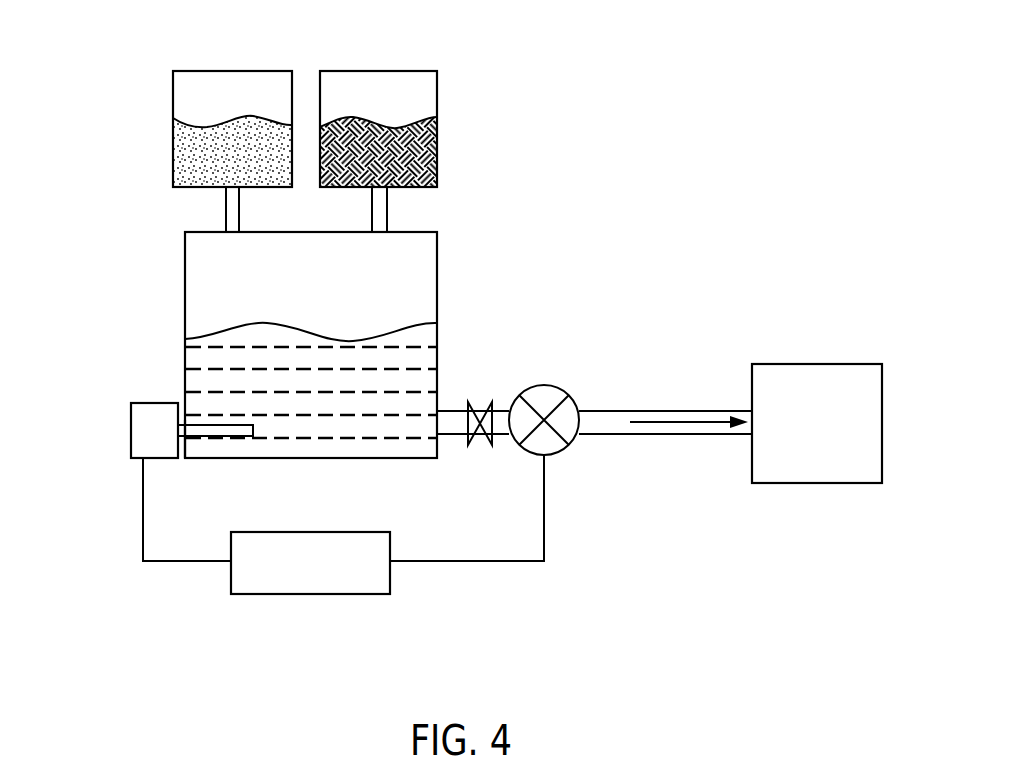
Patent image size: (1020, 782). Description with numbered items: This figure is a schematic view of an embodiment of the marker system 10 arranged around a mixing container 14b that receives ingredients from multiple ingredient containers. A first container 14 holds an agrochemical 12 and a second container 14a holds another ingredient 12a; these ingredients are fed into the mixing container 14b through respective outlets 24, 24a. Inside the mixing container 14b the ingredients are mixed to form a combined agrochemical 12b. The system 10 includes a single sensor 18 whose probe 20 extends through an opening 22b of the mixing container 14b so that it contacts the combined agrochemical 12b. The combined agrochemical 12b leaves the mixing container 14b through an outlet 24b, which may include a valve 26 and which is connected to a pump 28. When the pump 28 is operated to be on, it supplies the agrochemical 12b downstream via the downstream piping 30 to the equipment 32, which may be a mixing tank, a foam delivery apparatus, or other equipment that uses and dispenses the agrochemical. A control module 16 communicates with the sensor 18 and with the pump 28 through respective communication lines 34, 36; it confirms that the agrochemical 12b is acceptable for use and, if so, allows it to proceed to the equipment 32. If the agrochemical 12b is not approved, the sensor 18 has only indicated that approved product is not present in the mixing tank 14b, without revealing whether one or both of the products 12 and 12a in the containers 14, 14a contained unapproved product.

The marker system 10 is at (213, 600).
The agrochemical 12 is at (187, 142).
The ingredient 12a is at (437, 133).
The combined agrochemical 12b is at (423, 337).
The container 14 is at (238, 70).
The container 14a is at (393, 70).
The mixing container 14b is at (437, 268).
The control module 16 is at (312, 594).
The sensor 18 is at (152, 403).
The probe 20 is at (220, 428).
The opening 22b is at (183, 440).
The outlet 24 is at (223, 225).
The outlet 24a is at (387, 223).
The outlet 24b is at (457, 437).
The valve 26 is at (470, 440).
The pump 28 is at (550, 384).
The downstream piping 30 is at (643, 410).
The equipment 32 is at (807, 483).
The communication line 34 is at (143, 523).
The communication line 36 is at (492, 561).